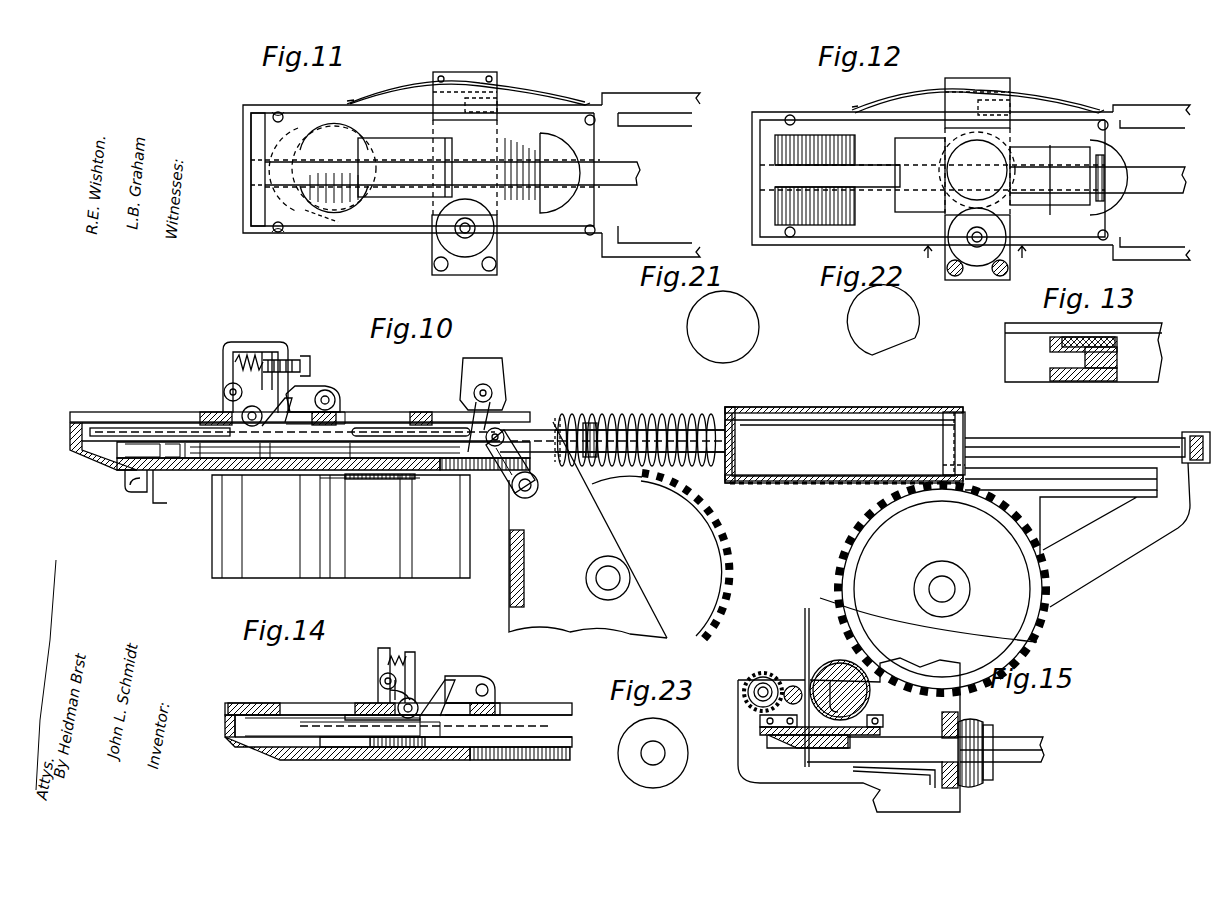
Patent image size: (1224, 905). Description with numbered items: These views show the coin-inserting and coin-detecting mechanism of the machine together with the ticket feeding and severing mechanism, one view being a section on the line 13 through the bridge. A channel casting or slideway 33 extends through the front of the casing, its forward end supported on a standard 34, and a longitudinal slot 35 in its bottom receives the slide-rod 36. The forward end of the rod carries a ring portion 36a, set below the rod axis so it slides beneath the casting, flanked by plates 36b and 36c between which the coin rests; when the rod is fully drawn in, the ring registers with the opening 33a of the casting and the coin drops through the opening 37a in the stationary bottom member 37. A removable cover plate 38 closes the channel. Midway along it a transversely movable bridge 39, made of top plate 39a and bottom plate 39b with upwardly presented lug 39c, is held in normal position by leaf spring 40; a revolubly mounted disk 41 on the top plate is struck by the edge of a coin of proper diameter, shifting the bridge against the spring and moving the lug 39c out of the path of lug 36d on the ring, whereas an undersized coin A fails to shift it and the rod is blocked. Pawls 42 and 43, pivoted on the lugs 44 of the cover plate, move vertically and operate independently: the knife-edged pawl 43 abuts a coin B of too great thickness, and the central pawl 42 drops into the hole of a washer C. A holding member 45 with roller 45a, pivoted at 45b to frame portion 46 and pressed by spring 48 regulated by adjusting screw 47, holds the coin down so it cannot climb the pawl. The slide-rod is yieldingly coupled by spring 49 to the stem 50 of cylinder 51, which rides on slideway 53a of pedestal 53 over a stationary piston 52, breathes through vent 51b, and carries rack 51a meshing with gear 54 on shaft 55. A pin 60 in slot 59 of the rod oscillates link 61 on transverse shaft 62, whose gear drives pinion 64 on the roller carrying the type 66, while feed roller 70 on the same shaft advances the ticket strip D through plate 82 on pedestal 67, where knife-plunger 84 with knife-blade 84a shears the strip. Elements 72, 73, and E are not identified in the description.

In FIG. 12, the section line 13 is at (980, 261).
In FIG. 11, the channel casting or slideway 33 is at (516, 126).
In FIG. 12, the channel casting or slideway 33 is at (806, 110).
In FIG. 13, the channel casting or slideway 33 is at (1160, 348).
In FIG. 11, the opening of channel casting 33a is at (560, 156).
In FIG. 12, the opening of channel casting 33a is at (1085, 152).
In FIG. 10, the standard 34 is at (167, 504).
In FIG. 11, the slot 35 is at (334, 167).
In FIG. 12, the slot 35 is at (800, 176).
In FIG. 11, the slide-rod 36 is at (618, 170).
In FIG. 12, the slide-rod 36 is at (1168, 175).
In FIG. 10, the slide-rod 36 is at (532, 430).
In FIG. 14, the slide-rod 36 is at (565, 742).
In FIG. 11, the ring portion 36a is at (310, 205).
In FIG. 10, the ring portion 36a is at (323, 450).
In FIG. 14, the ring portion 36a is at (350, 758).
In FIG. 11, the plate 36b is at (388, 145).
In FIG. 12, the plate 36b is at (1035, 155).
In FIG. 11, the plate 36c is at (264, 166).
In FIG. 12, the plate 36c is at (900, 157).
In FIG. 10, the plate 36c is at (93, 430).
In FIG. 14, the plate 36c is at (230, 726).
In FIG. 11, the lug 36d is at (332, 222).
In FIG. 14, the lug 36d is at (372, 748).
In FIG. 10, the outer bottom member 37 is at (110, 466).
In FIG. 10, the opening 37a is at (368, 470).
In FIG. 10, the cover plate 38 is at (108, 412).
In FIG. 14, the cover plate 38 is at (250, 706).
In FIG. 11, the bridge 39 is at (448, 95).
In FIG. 12, the bridge 39 is at (970, 85).
In FIG. 13, the top plate of bridge 39a is at (1050, 344).
In FIG. 13, the bottom plate of bridge 39b is at (1065, 381).
In FIG. 13, the lug 39c is at (1102, 366).
In FIG. 11, the spring 40 is at (562, 101).
In FIG. 12, the spring 40 is at (1045, 98).
In FIG. 11, the disk 41 is at (461, 250).
In FIG. 12, the disk 41 is at (975, 262).
In FIG. 13, the disk 41 is at (1105, 336).
In FIG. 10, the pawl 42 is at (328, 392).
In FIG. 14, the pawl 42 is at (470, 690).
In FIG. 10, the pawl 43 is at (268, 415).
In FIG. 14, the pawl 43 is at (445, 700).
In FIG. 10, the lugs 44 is at (340, 414).
In FIG. 14, the lugs 44 is at (495, 703).
In FIG. 10, the holding member 45 is at (255, 387).
In FIG. 14, the holding member 45 is at (410, 690).
In FIG. 14, the roller 45a is at (428, 712).
In FIG. 10, the pivot 45b is at (233, 392).
In FIG. 14, the pivot 45b is at (373, 675).
In FIG. 10, the frame portion 46 is at (255, 377).
In FIG. 14, the frame portion 46 is at (382, 650).
In FIG. 10, the adjusting screw 47 is at (280, 362).
In FIG. 10, the spring 48 is at (243, 352).
In FIG. 14, the spring 48 is at (400, 648).
In FIG. 10, the spring 49 is at (580, 414).
In FIG. 10, the stem 50 is at (660, 436).
In FIG. 10, the cylinder 51 is at (778, 420).
In FIG. 10, the rack 51a is at (740, 490).
In FIG. 10, the port or vent 51b is at (728, 418).
In FIG. 10, the piston 52 is at (966, 432).
In FIG. 10, the supporting pedestal or frame 53 is at (1160, 532).
In FIG. 10, the slideway 53a is at (1085, 482).
In FIG. 10, the gear 54 is at (835, 560).
In FIG. 10, the shaft 55 is at (948, 588).
In FIG. 10, the slot 59 is at (385, 436).
In FIG. 10, the pin 60 is at (505, 398).
In FIG. 10, the link 61 is at (498, 484).
In FIG. 10, the shaft 62 is at (532, 490).
In FIG. 15, the pinion 64 is at (793, 686).
In FIG. 15, the type 66 is at (783, 688).
In FIG. 10, the pedestal or bracket 67 is at (588, 530).
In FIG. 15, the pedestal or bracket 67 is at (849, 735).
In FIG. 15, the feed roller 70 is at (858, 676).
In FIG. 10, the sector gear 72 is at (660, 557).
In FIG. 10, the roller 73 is at (600, 572).
In FIG. 15, the plate 82 is at (762, 735).
In FIG. 15, the knife-plunger 84 is at (1020, 760).
In FIG. 15, the knife-blade 84a is at (800, 745).
In FIG. 12, the coin of too small diameter A is at (977, 170).
In FIG. 14, the coin of too great thickness B is at (345, 712).
In FIG. 23, the washer C is at (668, 735).
In FIG. 15, the ticket strip D is at (810, 638).
In FIG. 10, the reel E is at (341, 526).